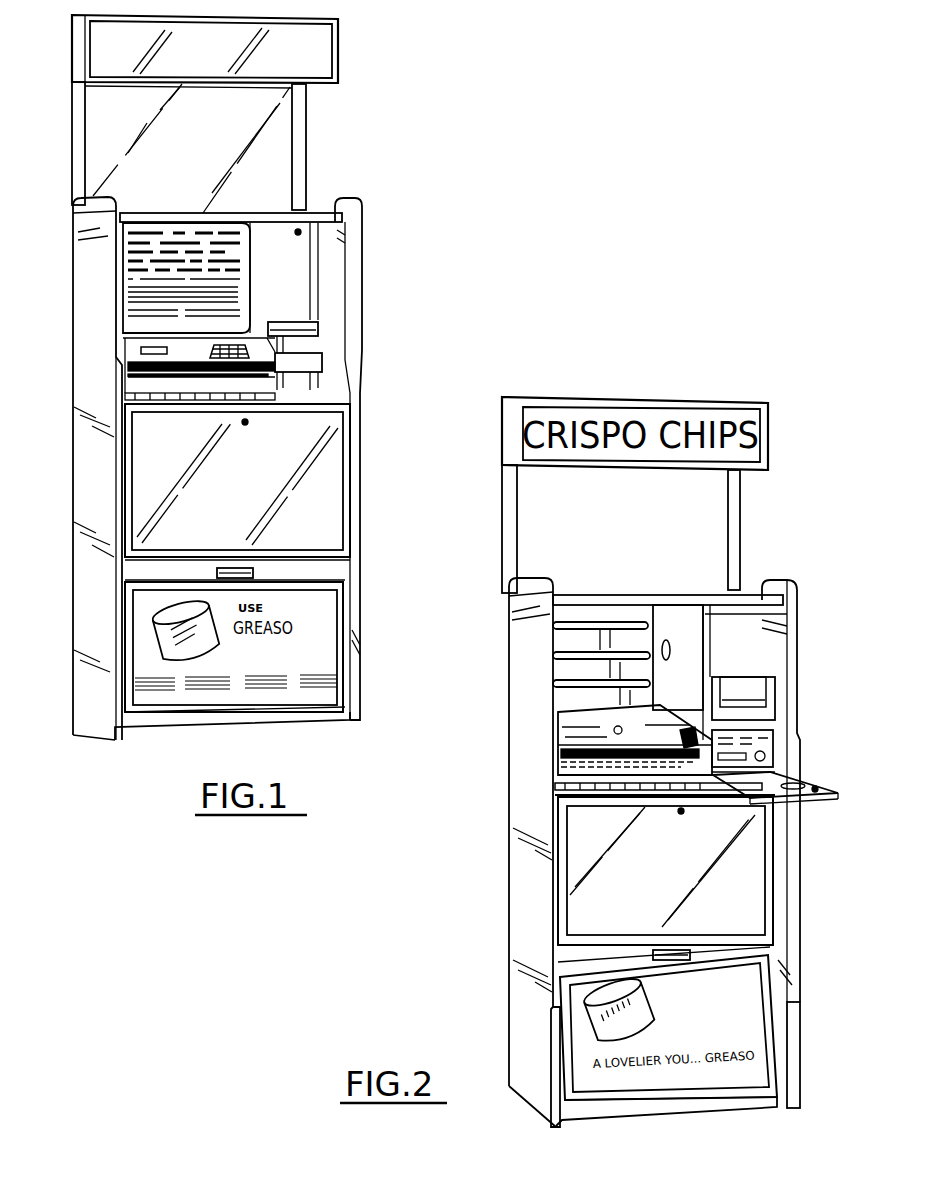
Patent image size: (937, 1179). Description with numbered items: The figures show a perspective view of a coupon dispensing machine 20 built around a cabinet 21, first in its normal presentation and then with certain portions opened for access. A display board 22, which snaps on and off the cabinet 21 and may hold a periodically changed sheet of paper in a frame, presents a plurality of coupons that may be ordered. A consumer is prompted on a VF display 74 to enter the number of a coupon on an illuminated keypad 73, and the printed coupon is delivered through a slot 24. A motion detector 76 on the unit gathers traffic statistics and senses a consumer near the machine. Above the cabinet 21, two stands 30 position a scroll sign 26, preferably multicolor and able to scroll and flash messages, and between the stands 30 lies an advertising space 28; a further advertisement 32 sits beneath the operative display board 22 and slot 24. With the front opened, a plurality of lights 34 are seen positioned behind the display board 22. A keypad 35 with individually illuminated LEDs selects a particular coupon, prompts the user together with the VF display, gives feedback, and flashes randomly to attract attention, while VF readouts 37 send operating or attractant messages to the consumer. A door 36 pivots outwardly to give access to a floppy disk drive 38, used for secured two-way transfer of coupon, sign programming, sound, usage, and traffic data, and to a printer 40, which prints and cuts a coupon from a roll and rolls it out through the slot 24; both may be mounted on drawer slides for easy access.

In FIG. 1, the coupon dispensing machine 20 is at (412, 192).
In FIG. 2, the coupon dispensing machine 20 is at (464, 803).
In FIG. 1, the cabinet 21 is at (103, 670).
In FIG. 2, the cabinet 21 is at (510, 620).
In FIG. 1, the display board 22 is at (236, 233).
In FIG. 1, the slot 24 is at (320, 328).
In FIG. 1, the scroll sign 26 is at (320, 62).
In FIG. 1, the advertising space 28 is at (285, 175).
In FIG. 1, the stands 30 is at (74, 122).
In FIG. 1, the further advertisement 32 is at (335, 432).
In FIG. 2, the lights 34 is at (556, 685).
In FIG. 2, the keypad 35 is at (685, 748).
In FIG. 2, the door 36 is at (810, 790).
In FIG. 2, the VF readouts 37 is at (560, 730).
In FIG. 2, the floppy disk drive 38 is at (773, 740).
In FIG. 2, the printer 40 is at (773, 680).
In FIG. 1, the illuminated keypad 73 is at (242, 345).
In FIG. 1, the VF display 74 is at (145, 345).
In FIG. 1, the motion detector 76 is at (222, 566).
In FIG. 2, the motion detector 76 is at (683, 950).